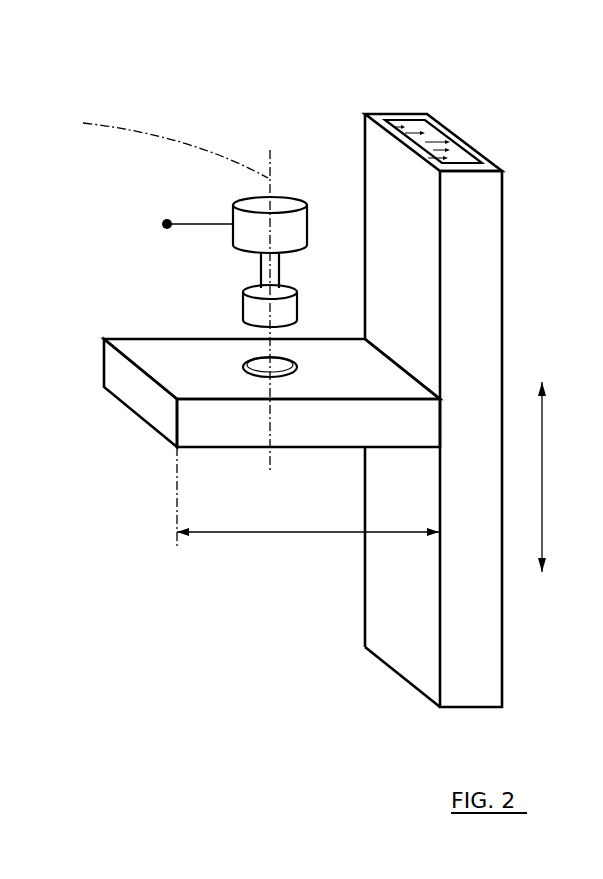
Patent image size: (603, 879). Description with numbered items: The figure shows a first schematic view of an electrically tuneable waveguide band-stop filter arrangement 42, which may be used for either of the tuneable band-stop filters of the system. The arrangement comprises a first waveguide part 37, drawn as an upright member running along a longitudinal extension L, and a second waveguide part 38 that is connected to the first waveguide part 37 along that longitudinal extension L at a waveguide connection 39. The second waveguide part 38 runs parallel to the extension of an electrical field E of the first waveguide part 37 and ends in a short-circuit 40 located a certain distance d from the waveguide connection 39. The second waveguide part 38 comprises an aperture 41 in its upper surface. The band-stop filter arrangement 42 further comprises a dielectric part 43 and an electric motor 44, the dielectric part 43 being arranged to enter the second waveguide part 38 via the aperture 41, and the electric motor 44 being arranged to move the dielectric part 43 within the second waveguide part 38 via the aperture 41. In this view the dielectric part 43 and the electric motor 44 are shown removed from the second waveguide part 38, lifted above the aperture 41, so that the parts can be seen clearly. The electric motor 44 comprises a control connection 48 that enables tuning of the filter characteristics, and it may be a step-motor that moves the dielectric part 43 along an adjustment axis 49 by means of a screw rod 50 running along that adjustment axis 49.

The first waveguide part 37 is at (482, 300).
The second waveguide part 38 is at (233, 423).
The waveguide connection 39 is at (397, 357).
The short-circuit 40 is at (142, 398).
The aperture 41 is at (258, 364).
The electrically tuneable waveguide band-stop filter arrangement 42 is at (188, 83).
The dielectric part 43 is at (258, 312).
The electric motor 44 is at (294, 237).
The control connection 48 is at (167, 219).
The adjustment axis 49 is at (159, 292).
The screw rod 50 is at (262, 272).
The electrical field E is at (433, 123).
The distance d is at (308, 497).
The longitudinal extension L is at (548, 477).